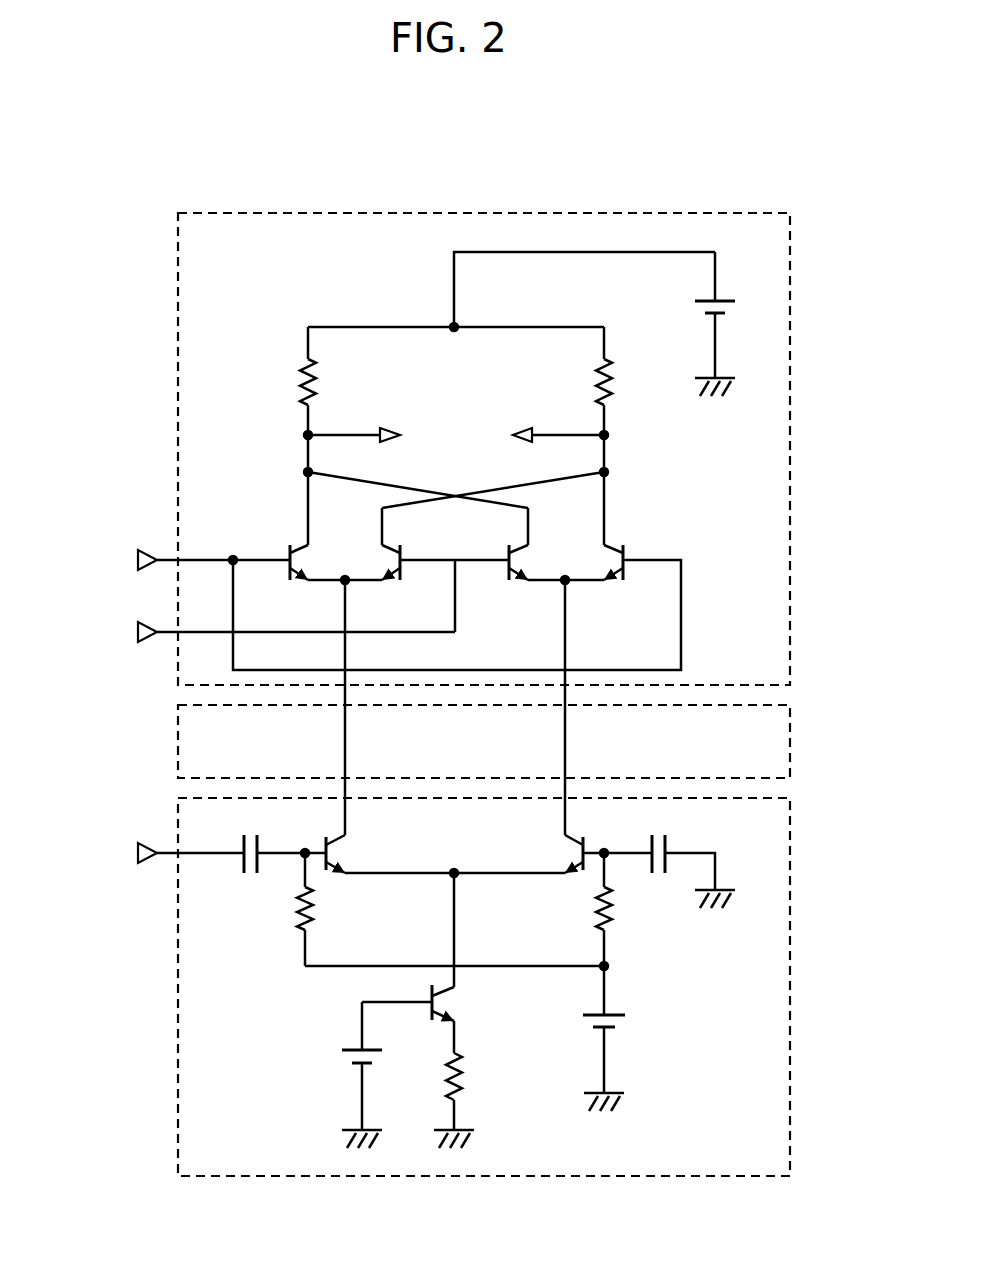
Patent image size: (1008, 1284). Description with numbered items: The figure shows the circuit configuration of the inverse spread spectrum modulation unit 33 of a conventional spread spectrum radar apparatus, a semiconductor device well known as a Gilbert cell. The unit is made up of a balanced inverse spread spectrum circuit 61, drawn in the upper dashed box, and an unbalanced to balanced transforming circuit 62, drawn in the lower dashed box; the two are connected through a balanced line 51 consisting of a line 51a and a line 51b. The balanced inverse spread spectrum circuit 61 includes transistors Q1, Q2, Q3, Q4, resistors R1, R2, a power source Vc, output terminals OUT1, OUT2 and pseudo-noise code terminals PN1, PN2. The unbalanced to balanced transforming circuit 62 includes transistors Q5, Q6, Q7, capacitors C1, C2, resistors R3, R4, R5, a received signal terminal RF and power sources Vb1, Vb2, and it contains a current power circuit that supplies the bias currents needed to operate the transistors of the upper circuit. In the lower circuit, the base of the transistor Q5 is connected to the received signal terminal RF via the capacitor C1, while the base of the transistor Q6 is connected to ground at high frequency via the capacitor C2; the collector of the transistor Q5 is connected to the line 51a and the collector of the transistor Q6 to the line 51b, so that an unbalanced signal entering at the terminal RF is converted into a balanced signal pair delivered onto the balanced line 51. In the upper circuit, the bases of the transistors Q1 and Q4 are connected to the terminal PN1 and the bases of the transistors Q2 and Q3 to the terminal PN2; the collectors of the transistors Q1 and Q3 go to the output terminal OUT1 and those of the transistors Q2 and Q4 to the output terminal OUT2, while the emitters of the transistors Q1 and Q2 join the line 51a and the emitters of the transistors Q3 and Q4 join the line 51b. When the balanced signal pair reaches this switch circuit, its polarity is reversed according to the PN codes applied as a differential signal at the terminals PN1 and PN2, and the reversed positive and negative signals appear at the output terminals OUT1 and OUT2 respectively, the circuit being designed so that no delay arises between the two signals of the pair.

The inverse spread spectrum modulation unit 33 is at (472, 139).
The balanced inverse spread spectrum circuit 61 is at (791, 263).
The balanced line 51 is at (790, 743).
The line 51a is at (345, 727).
The line 51b is at (565, 750).
The unbalanced to balanced transforming circuit 62 is at (790, 904).
The transistor Q1 is at (288, 544).
The transistor Q2 is at (400, 562).
The transistor Q3 is at (508, 562).
The transistor Q4 is at (619, 544).
The transistor Q5 is at (363, 854).
The transistor Q6 is at (545, 854).
The transistor Q7 is at (432, 947).
The resistor R1 is at (284, 399).
The resistor R2 is at (627, 399).
The resistor R3 is at (281, 909).
The resistor R4 is at (627, 909).
The resistor R5 is at (467, 1084).
The capacitor C1 is at (279, 837).
The capacitor C2 is at (659, 854).
The power source Vc is at (736, 324).
The power source Vb1 is at (331, 1075).
The power source Vb2 is at (636, 1038).
The PN code terminal PN1 is at (178, 562).
The PN code terminal PN2 is at (260, 634).
The received signal terminal RF is at (164, 854).
The output terminal OUT1 is at (359, 418).
The output terminal OUT2 is at (549, 418).